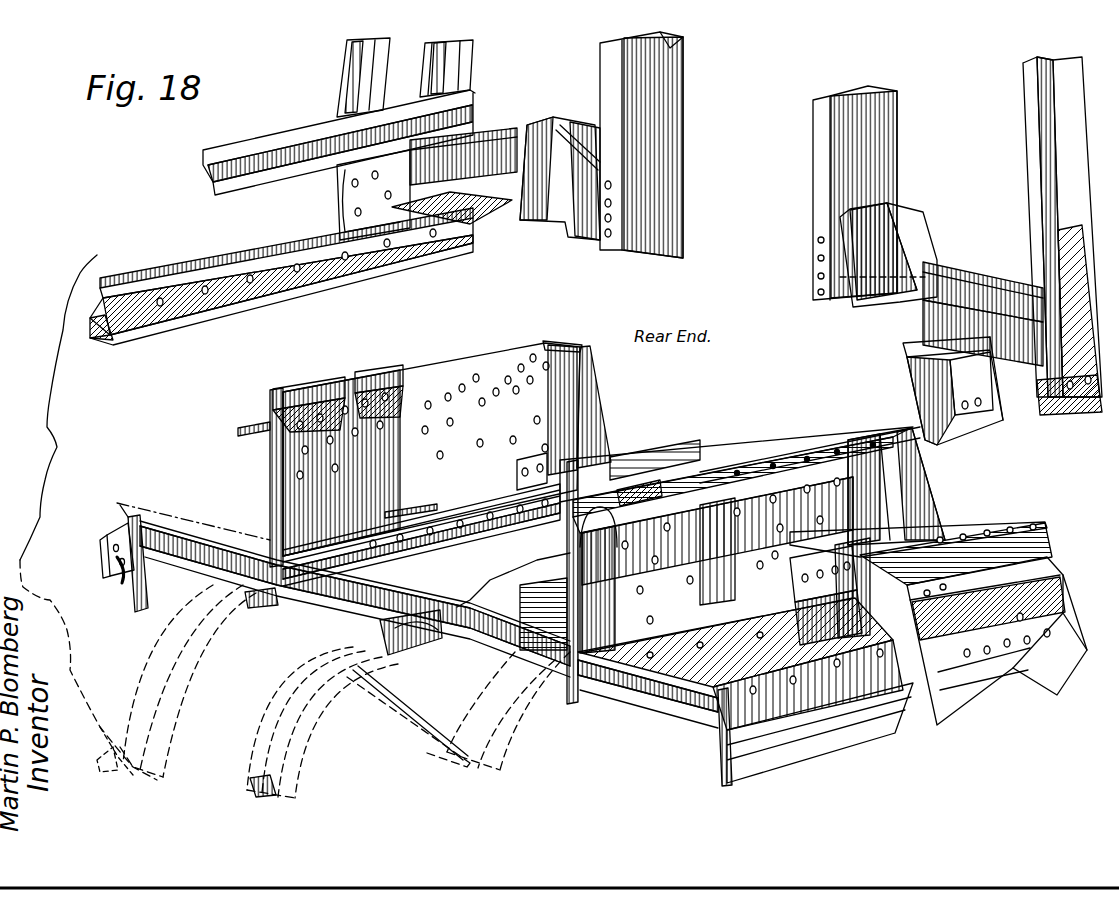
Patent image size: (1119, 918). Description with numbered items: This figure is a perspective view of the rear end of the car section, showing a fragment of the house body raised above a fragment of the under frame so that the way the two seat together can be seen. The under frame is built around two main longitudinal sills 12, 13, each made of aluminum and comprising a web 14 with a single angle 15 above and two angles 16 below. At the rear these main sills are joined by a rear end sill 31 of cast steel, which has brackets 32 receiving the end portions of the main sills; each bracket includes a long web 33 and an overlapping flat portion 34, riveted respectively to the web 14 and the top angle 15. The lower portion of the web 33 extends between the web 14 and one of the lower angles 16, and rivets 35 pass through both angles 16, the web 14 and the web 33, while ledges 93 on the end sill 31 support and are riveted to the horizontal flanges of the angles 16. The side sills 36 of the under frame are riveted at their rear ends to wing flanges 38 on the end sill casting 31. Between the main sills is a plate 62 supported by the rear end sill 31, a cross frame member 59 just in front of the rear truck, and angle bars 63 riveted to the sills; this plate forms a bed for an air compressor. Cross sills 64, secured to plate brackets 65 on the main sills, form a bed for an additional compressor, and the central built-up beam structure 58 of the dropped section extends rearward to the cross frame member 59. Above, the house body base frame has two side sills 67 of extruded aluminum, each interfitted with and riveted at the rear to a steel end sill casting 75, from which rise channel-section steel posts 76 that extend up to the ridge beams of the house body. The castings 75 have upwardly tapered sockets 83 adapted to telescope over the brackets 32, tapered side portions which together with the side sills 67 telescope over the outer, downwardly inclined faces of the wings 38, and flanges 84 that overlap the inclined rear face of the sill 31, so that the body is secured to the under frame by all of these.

The main longitudinal sill 12 is at (397, 739).
The main longitudinal sill 13 is at (258, 461).
The web 14 is at (287, 481).
The single angle 15 is at (683, 505).
The lower angles 16 is at (268, 432).
The rear end sill 31 is at (643, 460).
The brackets 32 is at (590, 385).
The long webs 33 is at (945, 505).
The overlapping flat portions 34 is at (432, 383).
The rivets 35 is at (393, 537).
The side sills 36 is at (120, 566).
The wing flanges 38 is at (1063, 618).
The central built-up beam structure 58 is at (430, 652).
The cross frame member 59 is at (372, 608).
The plate 62 is at (640, 490).
The angle bars 63 is at (467, 520).
The cross sills 64 is at (370, 363).
The plate brackets 65 is at (322, 463).
The side sills 67 is at (178, 280).
The end sill casting 75 is at (494, 150).
The steel posts 76 is at (665, 49).
The upwardly tapered sockets 83 is at (556, 130).
The flanges 84 is at (556, 216).
The ledges 93 is at (452, 555).